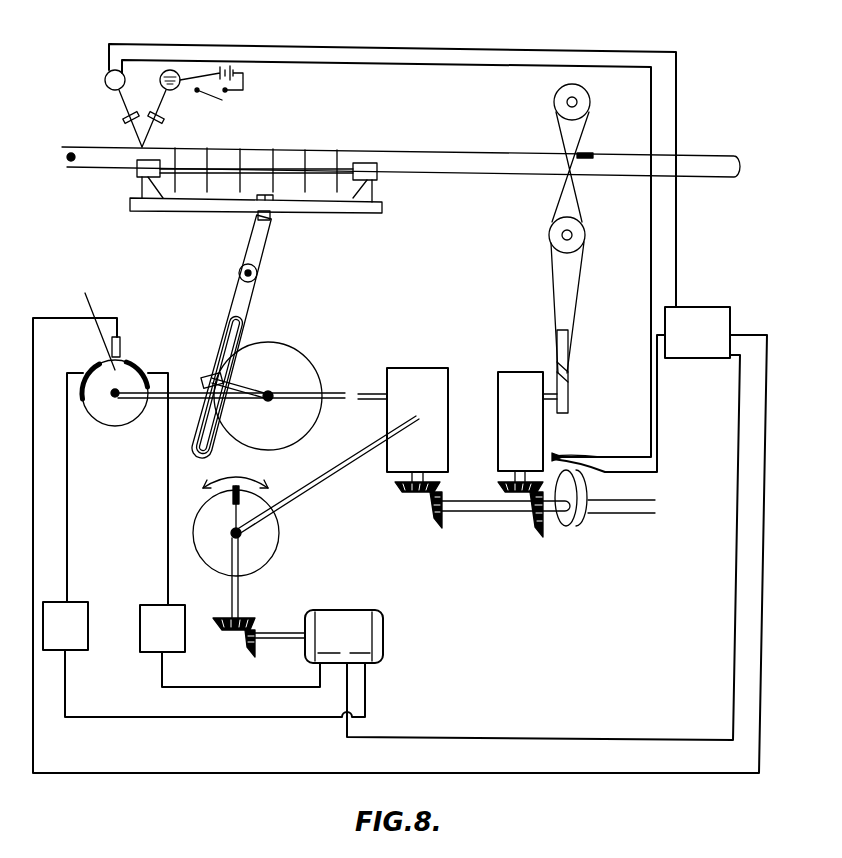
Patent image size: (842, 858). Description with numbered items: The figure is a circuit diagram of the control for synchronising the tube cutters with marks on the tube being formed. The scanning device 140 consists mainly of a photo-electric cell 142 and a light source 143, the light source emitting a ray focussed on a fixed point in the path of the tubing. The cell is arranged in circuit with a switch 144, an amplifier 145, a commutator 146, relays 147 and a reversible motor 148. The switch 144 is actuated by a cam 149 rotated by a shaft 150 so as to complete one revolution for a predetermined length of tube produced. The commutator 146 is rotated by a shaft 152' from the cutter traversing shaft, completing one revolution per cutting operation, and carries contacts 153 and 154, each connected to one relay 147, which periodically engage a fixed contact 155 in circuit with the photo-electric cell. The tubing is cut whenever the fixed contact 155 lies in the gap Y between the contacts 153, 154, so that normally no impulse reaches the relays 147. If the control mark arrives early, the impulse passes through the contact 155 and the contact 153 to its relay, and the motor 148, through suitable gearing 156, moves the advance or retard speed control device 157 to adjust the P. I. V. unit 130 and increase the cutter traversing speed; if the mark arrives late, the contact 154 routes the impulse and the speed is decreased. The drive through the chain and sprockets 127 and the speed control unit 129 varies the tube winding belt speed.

The chain and sprockets 127 is at (552, 297).
The speed control unit 129 is at (498, 403).
The P. I. V. unit 130 is at (437, 440).
The scanning device 140 is at (147, 98).
The photo-electric cell 142 is at (107, 72).
The light source 143 is at (172, 72).
The switch 144 is at (579, 461).
The amplifier 145 is at (711, 313).
The commutator 146 is at (117, 415).
The relays 147 is at (152, 613).
The reversible motor 148 is at (363, 630).
The cam 149 is at (562, 515).
The shaft 150 is at (483, 512).
The shaft 152' is at (252, 419).
The contact 153 is at (90, 365).
The contact 154 is at (138, 365).
The fixed contact 155 is at (120, 343).
The gearing 156 is at (247, 618).
The advance or retard speed control device 157 is at (272, 540).
The gap Y is at (93, 327).